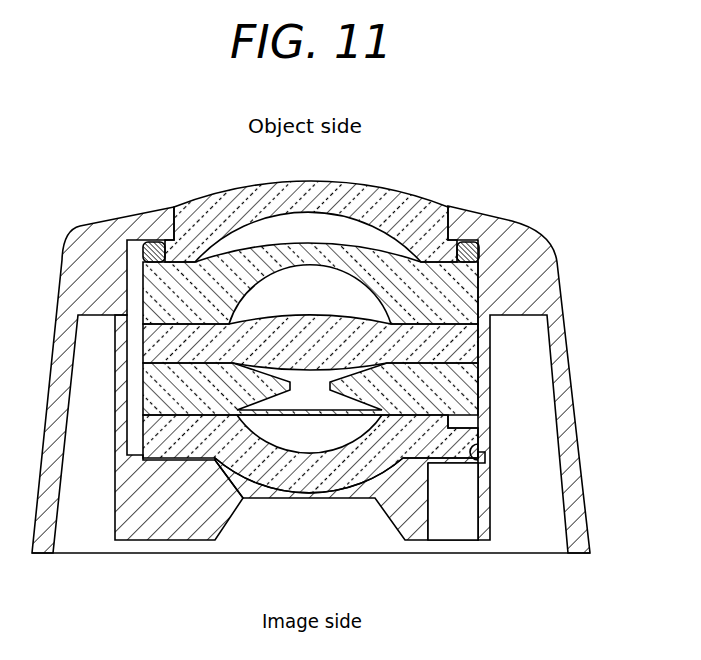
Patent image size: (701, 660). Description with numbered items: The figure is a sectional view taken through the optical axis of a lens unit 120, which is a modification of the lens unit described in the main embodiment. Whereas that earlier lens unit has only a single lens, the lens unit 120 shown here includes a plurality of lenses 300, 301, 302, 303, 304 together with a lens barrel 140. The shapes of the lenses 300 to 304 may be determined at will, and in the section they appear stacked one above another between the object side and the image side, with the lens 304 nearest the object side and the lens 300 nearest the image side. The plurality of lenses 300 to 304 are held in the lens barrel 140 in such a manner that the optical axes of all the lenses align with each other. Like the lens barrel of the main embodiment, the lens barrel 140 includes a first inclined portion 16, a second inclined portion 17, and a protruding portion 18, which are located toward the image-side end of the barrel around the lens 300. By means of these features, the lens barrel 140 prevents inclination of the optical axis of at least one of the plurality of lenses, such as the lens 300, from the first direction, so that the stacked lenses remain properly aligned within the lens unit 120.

The lens unit 120 is at (134, 172).
The lens barrel 140 is at (499, 488).
The lens 304 is at (391, 203).
The lens 303 is at (458, 293).
The lens 302 is at (454, 347).
The lens 301 is at (461, 388).
The lens 300 is at (328, 473).
The protruding portion 18 is at (460, 424).
The second inclined portion 17 is at (144, 450).
The first inclined portion 16 is at (464, 457).